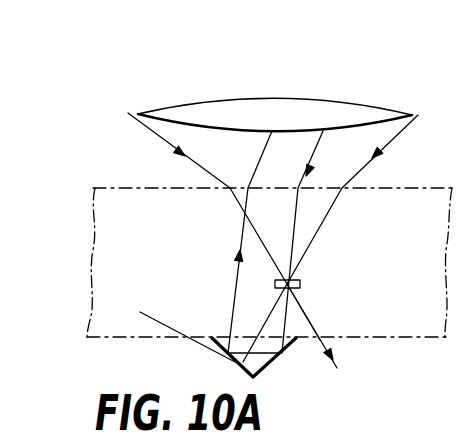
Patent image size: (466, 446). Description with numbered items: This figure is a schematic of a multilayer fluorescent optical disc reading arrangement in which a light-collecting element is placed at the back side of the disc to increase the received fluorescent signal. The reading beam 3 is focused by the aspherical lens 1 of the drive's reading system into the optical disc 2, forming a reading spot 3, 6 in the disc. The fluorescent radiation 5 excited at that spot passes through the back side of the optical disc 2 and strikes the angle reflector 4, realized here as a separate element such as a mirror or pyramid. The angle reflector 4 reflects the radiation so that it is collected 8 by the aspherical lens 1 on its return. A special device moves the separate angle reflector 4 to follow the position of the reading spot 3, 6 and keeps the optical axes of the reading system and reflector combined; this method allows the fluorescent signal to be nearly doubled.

The aspherical lens 1 is at (379, 104).
The optical disc 2 is at (413, 200).
The reading spot 3 is at (314, 153).
The angle reflector 4 is at (190, 339).
The fluorescent radiation 5 is at (303, 310).
The reading spot 6 is at (301, 282).
The collected fluorescent radiation 8 is at (243, 230).